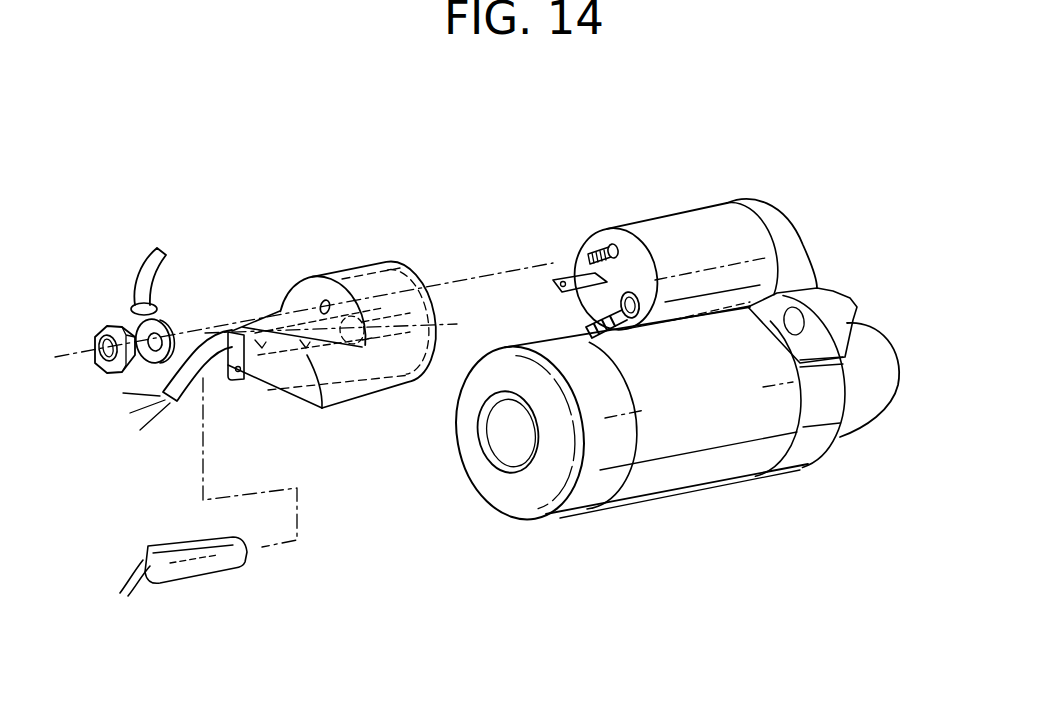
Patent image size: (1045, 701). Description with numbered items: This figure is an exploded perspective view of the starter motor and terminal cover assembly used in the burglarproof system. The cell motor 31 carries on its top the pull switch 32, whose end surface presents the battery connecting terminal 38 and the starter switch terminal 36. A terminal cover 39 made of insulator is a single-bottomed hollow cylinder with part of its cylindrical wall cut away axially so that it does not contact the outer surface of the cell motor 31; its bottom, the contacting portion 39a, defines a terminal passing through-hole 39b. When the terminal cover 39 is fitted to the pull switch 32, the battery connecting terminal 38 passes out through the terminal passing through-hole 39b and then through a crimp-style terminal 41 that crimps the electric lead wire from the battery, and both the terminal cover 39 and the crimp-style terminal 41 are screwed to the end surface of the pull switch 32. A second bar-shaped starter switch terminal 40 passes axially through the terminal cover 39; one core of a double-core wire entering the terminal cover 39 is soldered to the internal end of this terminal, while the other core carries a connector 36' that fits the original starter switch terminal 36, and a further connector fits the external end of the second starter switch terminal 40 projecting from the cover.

The cell motor 31 is at (707, 463).
The pull switch 32 is at (707, 220).
The starter switch terminal 36 is at (565, 243).
The connector 36' is at (554, 314).
The battery connecting terminal 38 is at (597, 250).
The terminal cover 39 is at (364, 469).
The contacting portion 39a is at (326, 287).
The terminal passing through-hole 39b is at (319, 305).
The second bar-shaped starter switch terminal 40 is at (262, 380).
The crimp-style terminal 41 is at (168, 320).